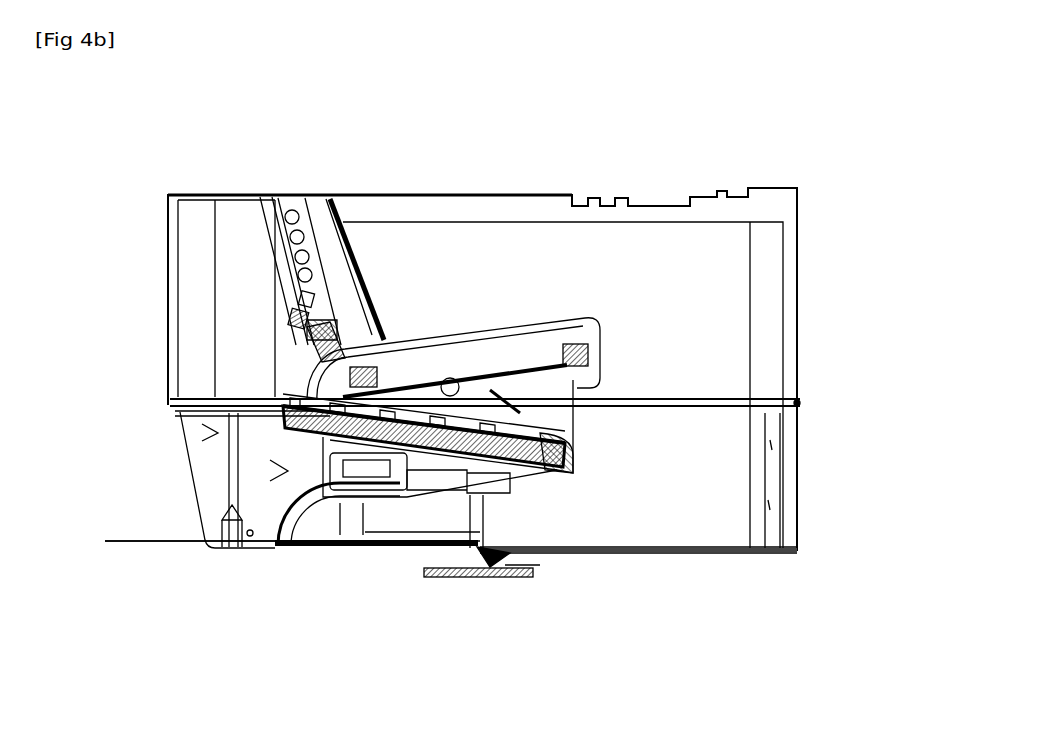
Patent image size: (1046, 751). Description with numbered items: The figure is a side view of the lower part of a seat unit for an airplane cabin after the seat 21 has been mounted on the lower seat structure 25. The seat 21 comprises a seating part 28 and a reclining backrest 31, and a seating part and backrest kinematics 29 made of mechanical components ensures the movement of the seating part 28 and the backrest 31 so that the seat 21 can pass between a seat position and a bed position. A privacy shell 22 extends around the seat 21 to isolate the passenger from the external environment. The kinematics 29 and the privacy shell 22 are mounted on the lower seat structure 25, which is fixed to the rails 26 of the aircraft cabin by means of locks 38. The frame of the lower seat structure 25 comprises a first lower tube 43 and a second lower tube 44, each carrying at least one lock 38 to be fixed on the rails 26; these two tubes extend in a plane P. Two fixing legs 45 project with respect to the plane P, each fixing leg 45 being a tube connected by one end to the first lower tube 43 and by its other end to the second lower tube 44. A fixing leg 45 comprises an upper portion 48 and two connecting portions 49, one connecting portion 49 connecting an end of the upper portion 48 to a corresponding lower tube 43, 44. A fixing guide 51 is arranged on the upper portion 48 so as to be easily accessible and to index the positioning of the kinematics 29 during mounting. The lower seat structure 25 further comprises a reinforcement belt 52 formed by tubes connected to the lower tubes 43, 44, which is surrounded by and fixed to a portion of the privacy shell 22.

The seat 21 is at (372, 262).
The privacy shell 22 is at (700, 267).
The lower seat structure 25 is at (288, 471).
The rails 26 is at (443, 572).
The seating part 28 is at (480, 350).
The seating part and backrest kinematics 29 is at (563, 421).
The reclining backrest 31 is at (333, 255).
The lock 38 is at (500, 570).
The first lower tube 43 is at (478, 560).
The second lower tube 44 is at (280, 557).
The fixing leg 45 is at (303, 480).
The upper portion 48 is at (320, 363).
The connecting portion 49 is at (285, 520).
The fixing guide 51 is at (335, 395).
The reinforcement belt 52 is at (215, 433).
The plane P is at (145, 541).